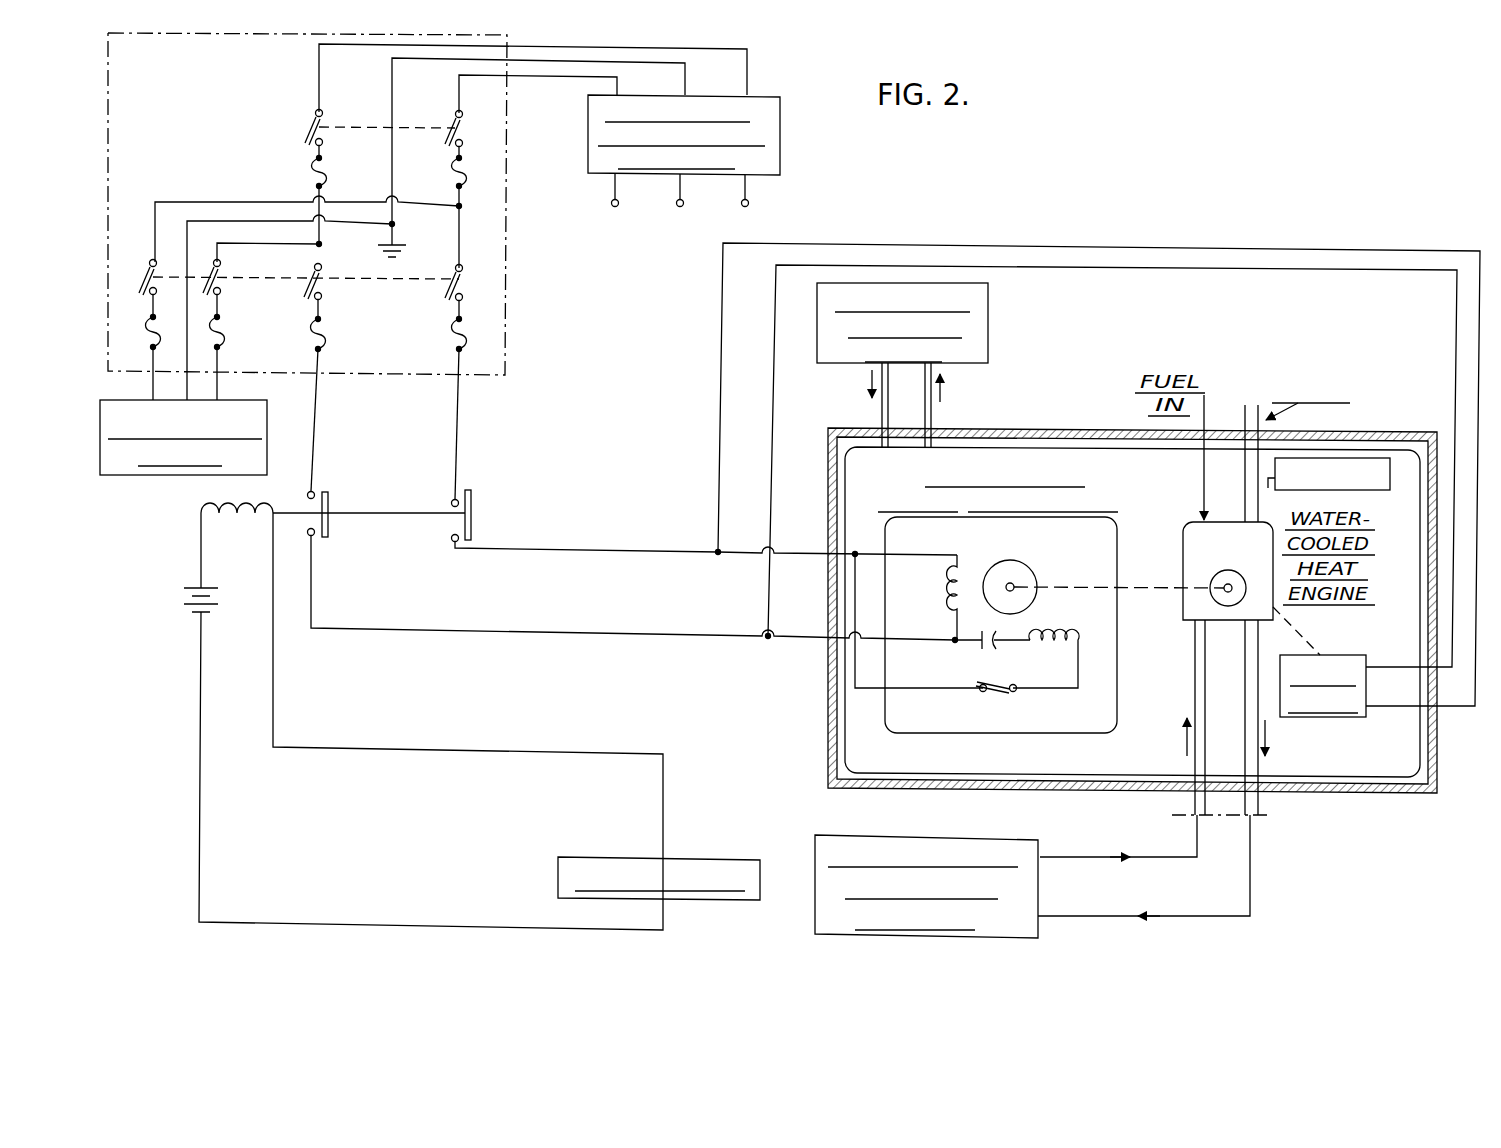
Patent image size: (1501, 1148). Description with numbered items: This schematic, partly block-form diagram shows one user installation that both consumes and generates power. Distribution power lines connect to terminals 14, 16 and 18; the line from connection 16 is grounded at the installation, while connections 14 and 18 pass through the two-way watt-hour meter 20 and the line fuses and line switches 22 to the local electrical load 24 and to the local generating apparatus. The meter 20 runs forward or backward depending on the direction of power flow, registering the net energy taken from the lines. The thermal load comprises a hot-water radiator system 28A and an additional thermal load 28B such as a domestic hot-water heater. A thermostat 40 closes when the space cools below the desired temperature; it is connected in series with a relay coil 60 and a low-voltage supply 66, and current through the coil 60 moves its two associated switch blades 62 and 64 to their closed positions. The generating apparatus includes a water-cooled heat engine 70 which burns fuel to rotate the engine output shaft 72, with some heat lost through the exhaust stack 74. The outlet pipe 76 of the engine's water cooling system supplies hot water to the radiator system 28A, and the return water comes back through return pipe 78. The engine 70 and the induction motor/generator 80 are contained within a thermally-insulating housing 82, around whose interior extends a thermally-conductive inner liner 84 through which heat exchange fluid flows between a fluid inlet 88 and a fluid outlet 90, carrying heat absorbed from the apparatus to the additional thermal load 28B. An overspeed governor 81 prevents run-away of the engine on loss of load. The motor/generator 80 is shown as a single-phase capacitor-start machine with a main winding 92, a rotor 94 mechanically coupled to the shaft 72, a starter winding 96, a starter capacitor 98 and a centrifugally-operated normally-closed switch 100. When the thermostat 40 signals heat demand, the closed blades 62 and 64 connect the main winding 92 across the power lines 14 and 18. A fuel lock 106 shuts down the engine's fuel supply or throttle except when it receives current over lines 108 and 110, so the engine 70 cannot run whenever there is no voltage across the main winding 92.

The terminal 14 is at (748, 206).
The terminal 16 is at (679, 207).
The terminal 18 is at (611, 205).
The two-way watt-hour meter 20 is at (780, 158).
The line fuses and line switches 22 is at (372, 376).
The local electrical load 24 is at (150, 477).
The hot-water radiator system 28A is at (944, 939).
The additional thermal load 28B is at (990, 318).
The thermostat 40 is at (588, 857).
The relay coil 60 is at (248, 516).
The switch blade 62 is at (330, 527).
The switch blade 64 is at (472, 508).
The low-voltage supply 66 is at (196, 612).
The heat engine 70 is at (1191, 525).
The engine output shaft 72 is at (1212, 583).
The exhaust stack 74 is at (1264, 428).
The outlet pipe 76 is at (1252, 652).
The return pipe 78 is at (1194, 671).
The induction motor/generator 80 is at (1030, 736).
The overspeed governor 81 is at (1356, 460).
The thermally-insulating housing 82 is at (1415, 428).
The thermally-conductive inner liner 84 is at (1145, 447).
The fluid inlet 88 is at (880, 411).
The fluid outlet 90 is at (935, 413).
The main winding 92 is at (962, 567).
The rotor 94 is at (1033, 573).
The starter winding 96 is at (1065, 638).
The starter capacitor 98 is at (975, 646).
The centrifugally-operating normally-closed switch 100 is at (1001, 692).
The fuel lock 106 is at (1308, 718).
The line 108 is at (720, 455).
The line 110 is at (800, 443).